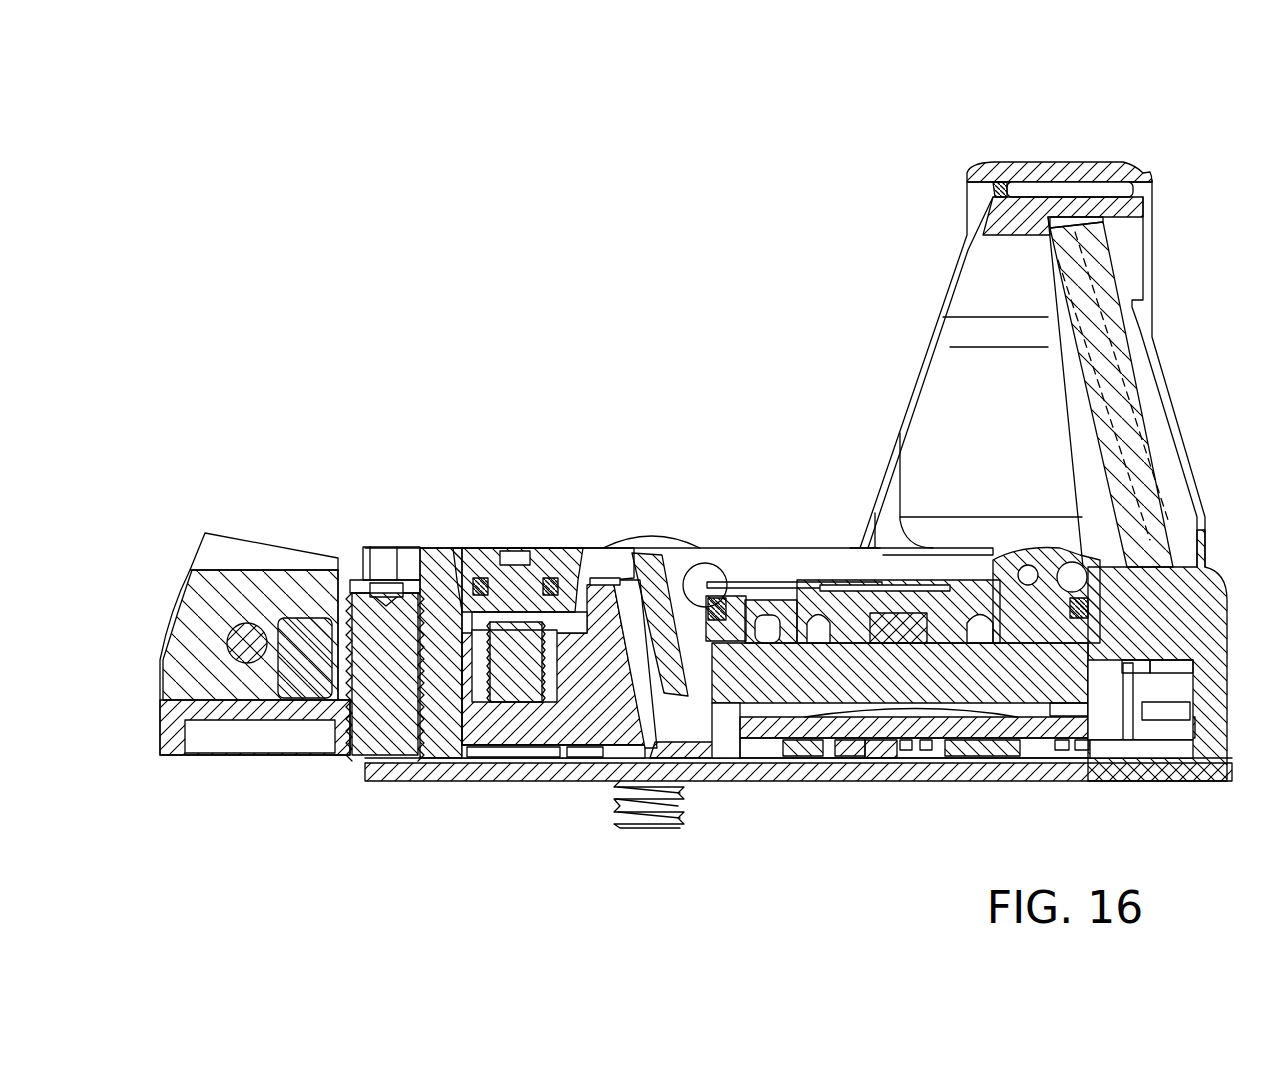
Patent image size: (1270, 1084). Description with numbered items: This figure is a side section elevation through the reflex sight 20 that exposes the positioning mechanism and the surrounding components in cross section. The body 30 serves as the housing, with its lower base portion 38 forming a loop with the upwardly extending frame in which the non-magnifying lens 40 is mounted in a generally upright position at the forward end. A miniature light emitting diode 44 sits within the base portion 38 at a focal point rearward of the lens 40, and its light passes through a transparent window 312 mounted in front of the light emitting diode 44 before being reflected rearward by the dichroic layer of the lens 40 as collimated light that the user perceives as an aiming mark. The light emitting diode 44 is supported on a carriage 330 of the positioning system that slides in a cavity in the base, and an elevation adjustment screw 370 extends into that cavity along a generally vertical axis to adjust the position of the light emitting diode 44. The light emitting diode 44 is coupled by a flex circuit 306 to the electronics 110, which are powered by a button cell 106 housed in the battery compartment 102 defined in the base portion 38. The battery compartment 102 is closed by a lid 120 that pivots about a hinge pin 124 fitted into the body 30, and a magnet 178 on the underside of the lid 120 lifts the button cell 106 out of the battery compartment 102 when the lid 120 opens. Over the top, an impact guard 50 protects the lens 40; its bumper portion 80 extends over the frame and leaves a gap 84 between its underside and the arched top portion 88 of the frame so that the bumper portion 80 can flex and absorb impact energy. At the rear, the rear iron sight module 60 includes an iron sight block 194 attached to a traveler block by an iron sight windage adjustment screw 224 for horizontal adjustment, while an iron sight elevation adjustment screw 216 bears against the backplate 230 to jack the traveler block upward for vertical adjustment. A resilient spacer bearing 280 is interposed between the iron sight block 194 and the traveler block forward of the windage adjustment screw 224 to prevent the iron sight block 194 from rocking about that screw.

The reflex sight 20 is at (697, 332).
The body 30 is at (1218, 566).
The base portion 38 is at (440, 560).
The lens 40 is at (1140, 370).
The light emitting diode 44 is at (632, 612).
The impact guard 50 is at (1152, 242).
The rear iron sight module 60 is at (322, 532).
The bumper portion 80 is at (1048, 160).
The gap 84 is at (985, 192).
The arched top portion 88 is at (1132, 210).
The battery compartment 102 is at (776, 722).
The button cell 106 is at (1048, 692).
The electronics 110 is at (988, 745).
The lid 120 is at (762, 600).
The hinge pin 124 is at (1053, 560).
The magnet 178 is at (888, 632).
The iron sight block 194 is at (240, 576).
The iron sight elevation adjustment screw 216 is at (357, 578).
The iron sight windage adjustment screw 224 is at (240, 640).
The backplate 230 is at (1196, 775).
The resilient spacer bearing 280 is at (296, 690).
The flex circuit 306 is at (686, 742).
The transparent window 312 is at (660, 590).
The carriage 330 is at (505, 735).
The elevation adjustment screw 370 is at (546, 566).